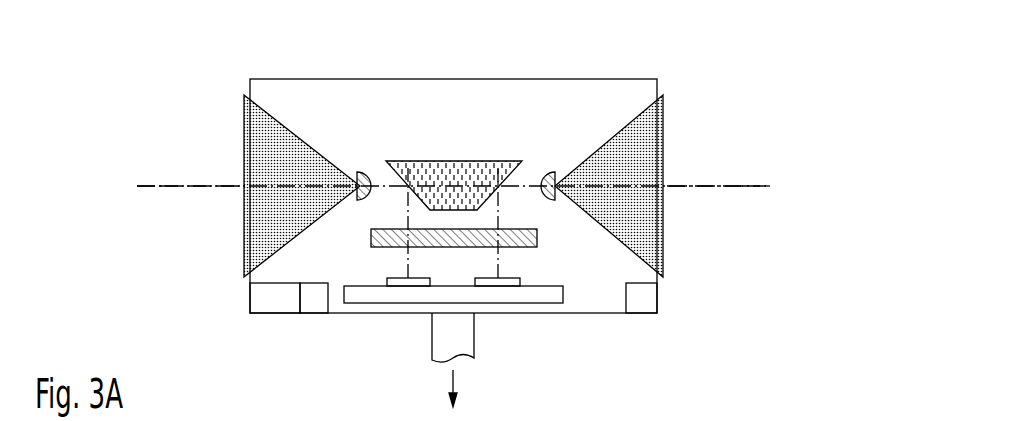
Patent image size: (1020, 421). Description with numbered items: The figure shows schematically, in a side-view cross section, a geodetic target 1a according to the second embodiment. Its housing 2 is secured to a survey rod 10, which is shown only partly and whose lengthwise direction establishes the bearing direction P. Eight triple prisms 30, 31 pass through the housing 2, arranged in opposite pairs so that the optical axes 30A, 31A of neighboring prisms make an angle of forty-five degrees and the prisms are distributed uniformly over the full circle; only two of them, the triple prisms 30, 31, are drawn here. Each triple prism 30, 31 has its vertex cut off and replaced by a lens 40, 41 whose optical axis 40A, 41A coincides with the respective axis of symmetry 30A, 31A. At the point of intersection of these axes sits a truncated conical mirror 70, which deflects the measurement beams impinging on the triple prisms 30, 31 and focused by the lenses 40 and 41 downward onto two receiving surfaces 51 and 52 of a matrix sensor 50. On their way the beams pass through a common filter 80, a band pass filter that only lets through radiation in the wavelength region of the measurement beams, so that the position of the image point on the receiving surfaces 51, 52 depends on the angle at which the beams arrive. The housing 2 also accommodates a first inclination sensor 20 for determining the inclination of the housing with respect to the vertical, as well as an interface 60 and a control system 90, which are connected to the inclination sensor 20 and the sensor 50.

The geodetic target 1a is at (820, 62).
The housing 2 is at (588, 78).
The survey rod 10 is at (476, 343).
The first inclination sensor 20 is at (314, 316).
The triple prism 30 is at (244, 104).
The triple prism 31 is at (663, 108).
The axis of symmetry 30A is at (160, 186).
The optical axis 31A is at (750, 186).
The lens 40 is at (357, 172).
The lens 41 is at (545, 172).
The optical axis 40A is at (188, 184).
The optical axis 41A is at (718, 184).
The matrix sensor 50 is at (563, 298).
The receiving surface 51 is at (387, 280).
The receiving surface 52 is at (521, 280).
The interface 60 is at (268, 316).
The truncated conical mirror 70 is at (462, 160).
The filter 80 is at (371, 238).
The control system 90 is at (641, 300).